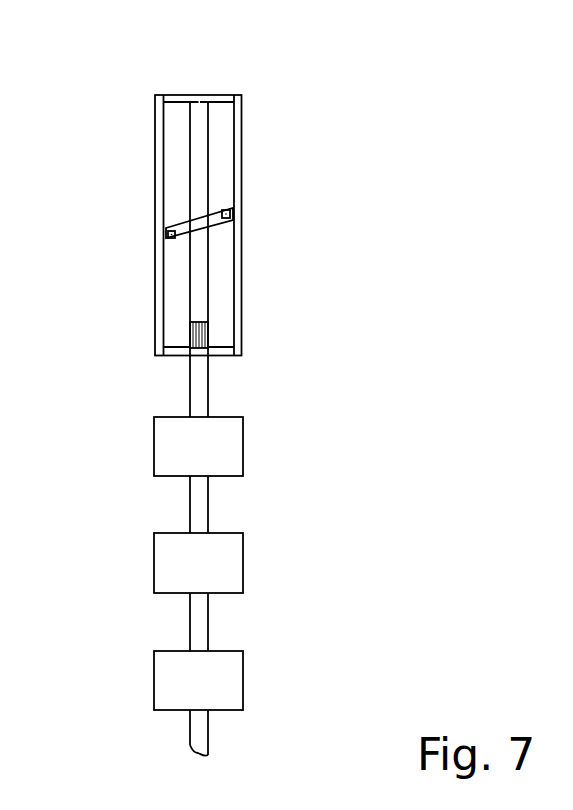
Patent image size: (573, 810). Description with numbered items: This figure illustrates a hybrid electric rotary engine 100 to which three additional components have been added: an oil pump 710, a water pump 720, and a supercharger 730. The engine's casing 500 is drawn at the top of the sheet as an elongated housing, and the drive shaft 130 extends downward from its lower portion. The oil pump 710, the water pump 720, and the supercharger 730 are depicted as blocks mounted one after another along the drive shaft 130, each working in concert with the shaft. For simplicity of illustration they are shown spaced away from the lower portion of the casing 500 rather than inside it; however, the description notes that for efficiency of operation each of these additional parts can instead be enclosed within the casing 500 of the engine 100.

The hybrid electric rotary engine 100 is at (113, 79).
The casing 500 is at (235, 88).
The drive shaft 130 is at (190, 374).
The oil pump 710 is at (230, 476).
The water pump 720 is at (230, 593).
The supercharger 730 is at (230, 710).